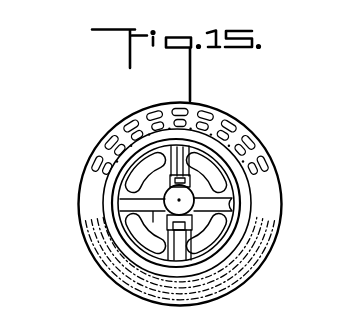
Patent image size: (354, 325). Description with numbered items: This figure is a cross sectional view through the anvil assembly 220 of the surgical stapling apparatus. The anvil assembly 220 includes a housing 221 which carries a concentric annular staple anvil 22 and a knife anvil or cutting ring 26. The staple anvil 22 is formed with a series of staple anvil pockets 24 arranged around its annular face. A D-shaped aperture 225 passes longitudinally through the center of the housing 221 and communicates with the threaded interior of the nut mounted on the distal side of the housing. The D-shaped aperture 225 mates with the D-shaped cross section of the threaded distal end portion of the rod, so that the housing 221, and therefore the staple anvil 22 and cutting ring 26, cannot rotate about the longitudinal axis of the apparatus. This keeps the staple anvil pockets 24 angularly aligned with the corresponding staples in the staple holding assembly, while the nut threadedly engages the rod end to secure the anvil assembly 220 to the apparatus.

The anvil assembly 220 is at (130, 100).
The staple anvil 22 is at (216, 118).
The staple anvil pockets 24 is at (228, 116).
The knife anvil or cutting ring 26 is at (122, 192).
The D-shaped aperture 225 is at (166, 200).
The housing 221 is at (264, 247).